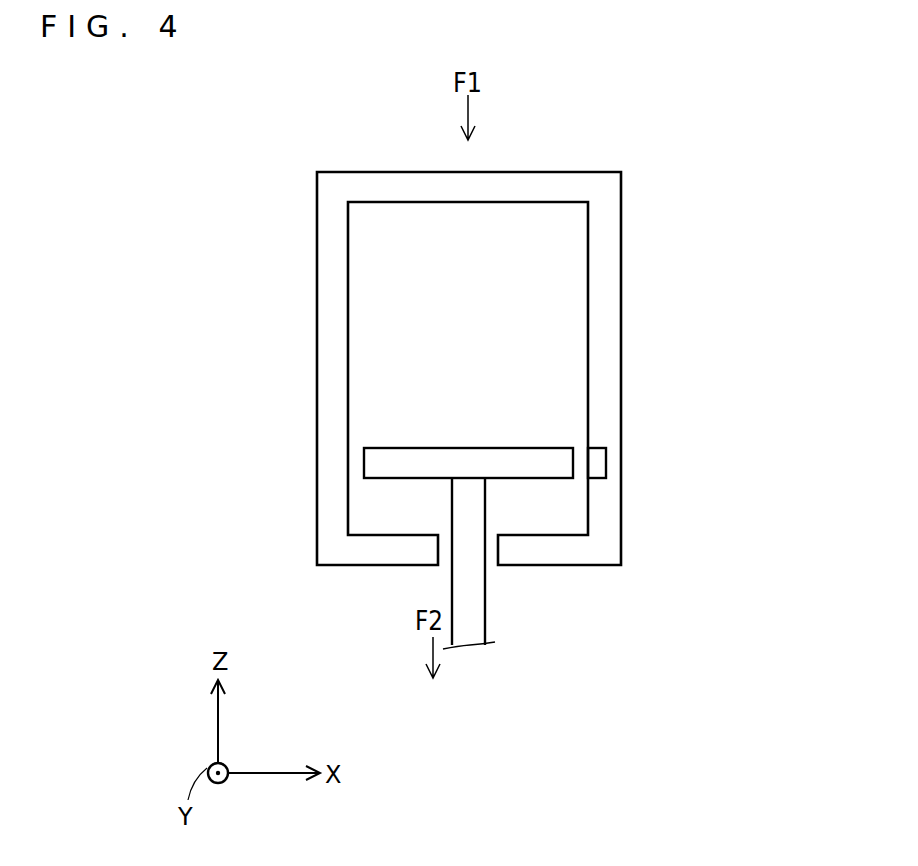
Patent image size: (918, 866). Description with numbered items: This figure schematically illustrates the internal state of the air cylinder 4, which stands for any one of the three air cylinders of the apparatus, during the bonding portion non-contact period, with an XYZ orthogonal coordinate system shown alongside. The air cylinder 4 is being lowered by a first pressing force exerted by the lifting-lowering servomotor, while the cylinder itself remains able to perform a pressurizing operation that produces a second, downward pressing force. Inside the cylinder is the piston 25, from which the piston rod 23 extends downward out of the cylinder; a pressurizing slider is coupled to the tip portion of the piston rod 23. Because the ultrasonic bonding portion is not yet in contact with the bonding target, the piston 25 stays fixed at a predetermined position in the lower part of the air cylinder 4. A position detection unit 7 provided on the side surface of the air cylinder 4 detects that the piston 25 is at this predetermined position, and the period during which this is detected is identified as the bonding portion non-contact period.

The air cylinder 4 is at (621, 304).
The piston 25 is at (470, 448).
The piston rod 23 is at (485, 610).
The position detection unit 7 is at (606, 464).